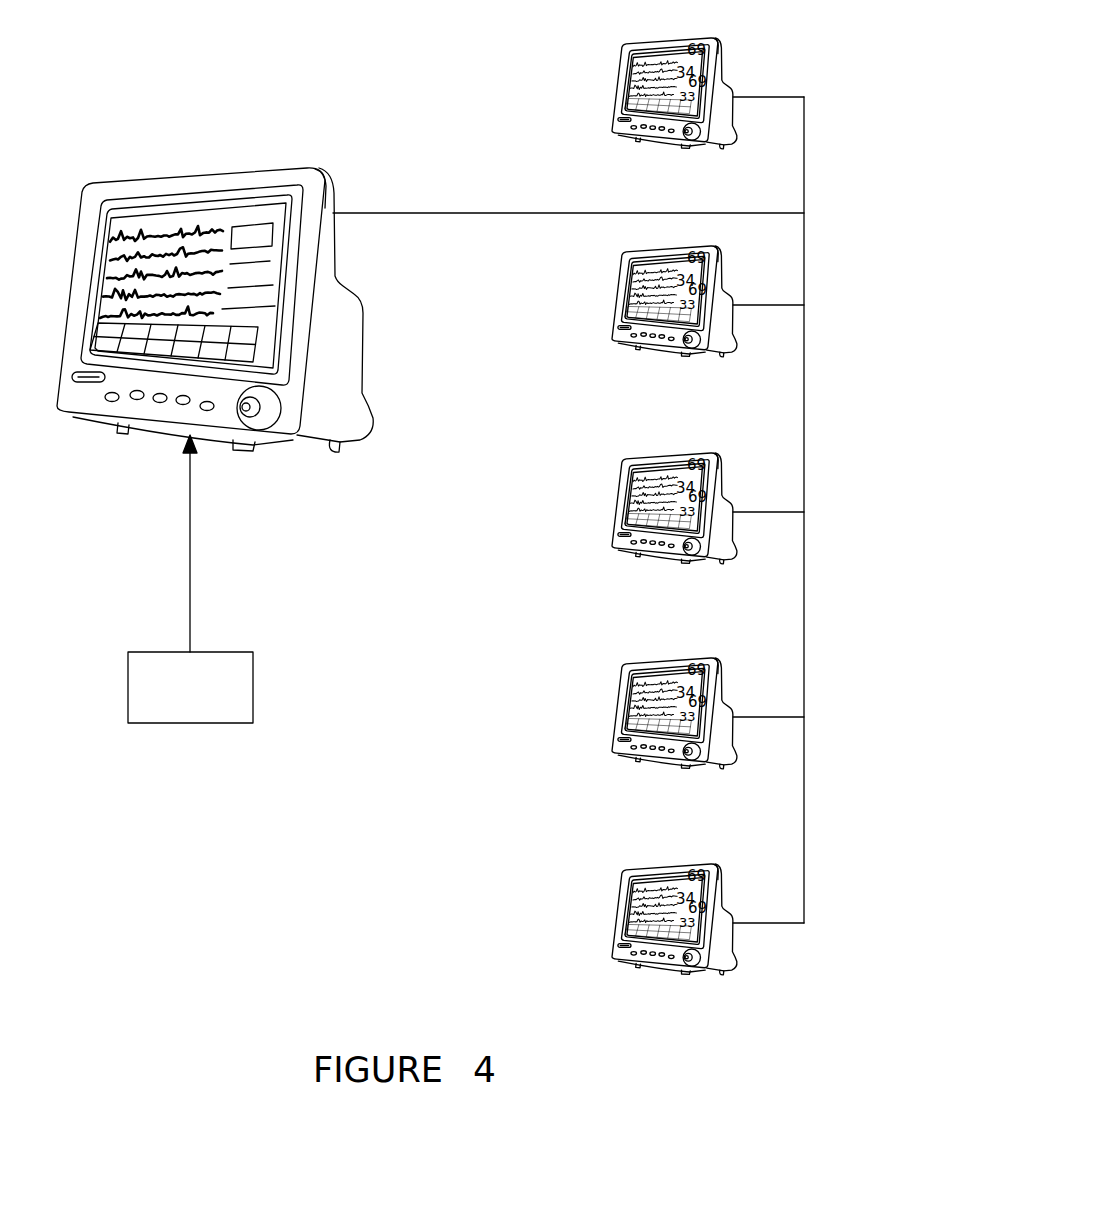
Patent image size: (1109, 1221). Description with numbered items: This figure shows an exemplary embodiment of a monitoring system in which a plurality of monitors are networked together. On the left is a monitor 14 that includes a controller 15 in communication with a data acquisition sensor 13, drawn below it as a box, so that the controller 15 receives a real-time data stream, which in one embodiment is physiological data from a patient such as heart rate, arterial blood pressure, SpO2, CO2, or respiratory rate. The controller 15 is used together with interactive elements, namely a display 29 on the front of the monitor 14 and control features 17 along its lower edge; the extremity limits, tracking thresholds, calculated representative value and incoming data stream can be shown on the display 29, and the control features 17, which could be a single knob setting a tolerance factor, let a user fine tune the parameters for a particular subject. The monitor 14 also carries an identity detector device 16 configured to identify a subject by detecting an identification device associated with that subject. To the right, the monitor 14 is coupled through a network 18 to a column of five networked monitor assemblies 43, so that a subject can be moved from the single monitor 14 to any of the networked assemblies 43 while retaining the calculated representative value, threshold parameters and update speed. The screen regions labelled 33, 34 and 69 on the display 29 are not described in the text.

The data acquisition sensor 13 is at (145, 652).
The monitor 14 is at (365, 100).
The controller 15 is at (353, 317).
The identity detector device 16 is at (192, 508).
The control features 17 is at (205, 412).
The network 18 is at (822, 357).
The display 29 is at (170, 218).
The displayed parameter value 33 is at (248, 322).
The displayed parameter value 34 is at (249, 270).
The networked monitor assemblies 43 is at (613, 125).
The display indicator box 69 is at (256, 254).